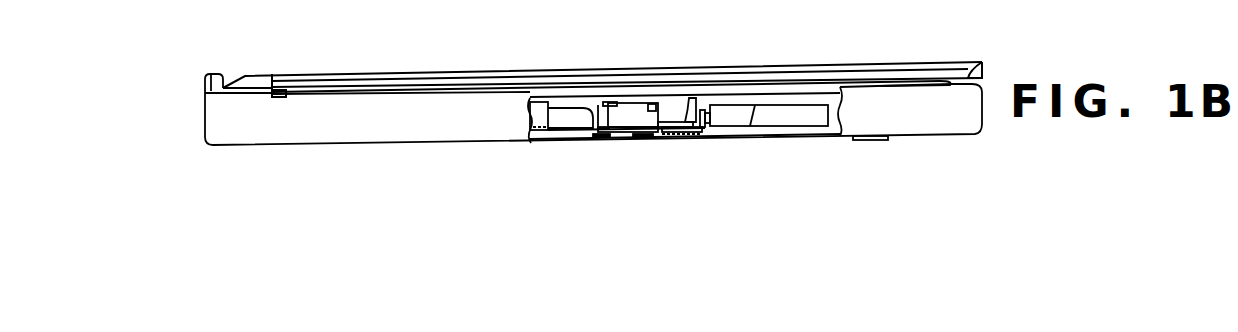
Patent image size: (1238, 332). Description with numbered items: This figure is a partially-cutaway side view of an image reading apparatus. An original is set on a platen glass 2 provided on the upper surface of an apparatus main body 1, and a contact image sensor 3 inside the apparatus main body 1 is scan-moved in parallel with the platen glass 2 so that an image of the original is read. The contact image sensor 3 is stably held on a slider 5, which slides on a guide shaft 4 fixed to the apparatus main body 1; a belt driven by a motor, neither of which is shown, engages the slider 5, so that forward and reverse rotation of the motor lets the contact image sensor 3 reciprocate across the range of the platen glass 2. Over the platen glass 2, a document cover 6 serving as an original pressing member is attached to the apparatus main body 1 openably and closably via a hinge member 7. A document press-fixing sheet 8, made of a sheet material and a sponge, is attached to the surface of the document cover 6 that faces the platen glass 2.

The apparatus main body 1 is at (435, 117).
The platen glass 2 is at (545, 95).
The contact image sensor 3 is at (692, 113).
The guide shaft 4 is at (598, 128).
The slider 5 is at (635, 112).
The document cover 6 is at (368, 75).
The hinge member 7 is at (240, 77).
The document press-fixing sheet 8 is at (805, 78).